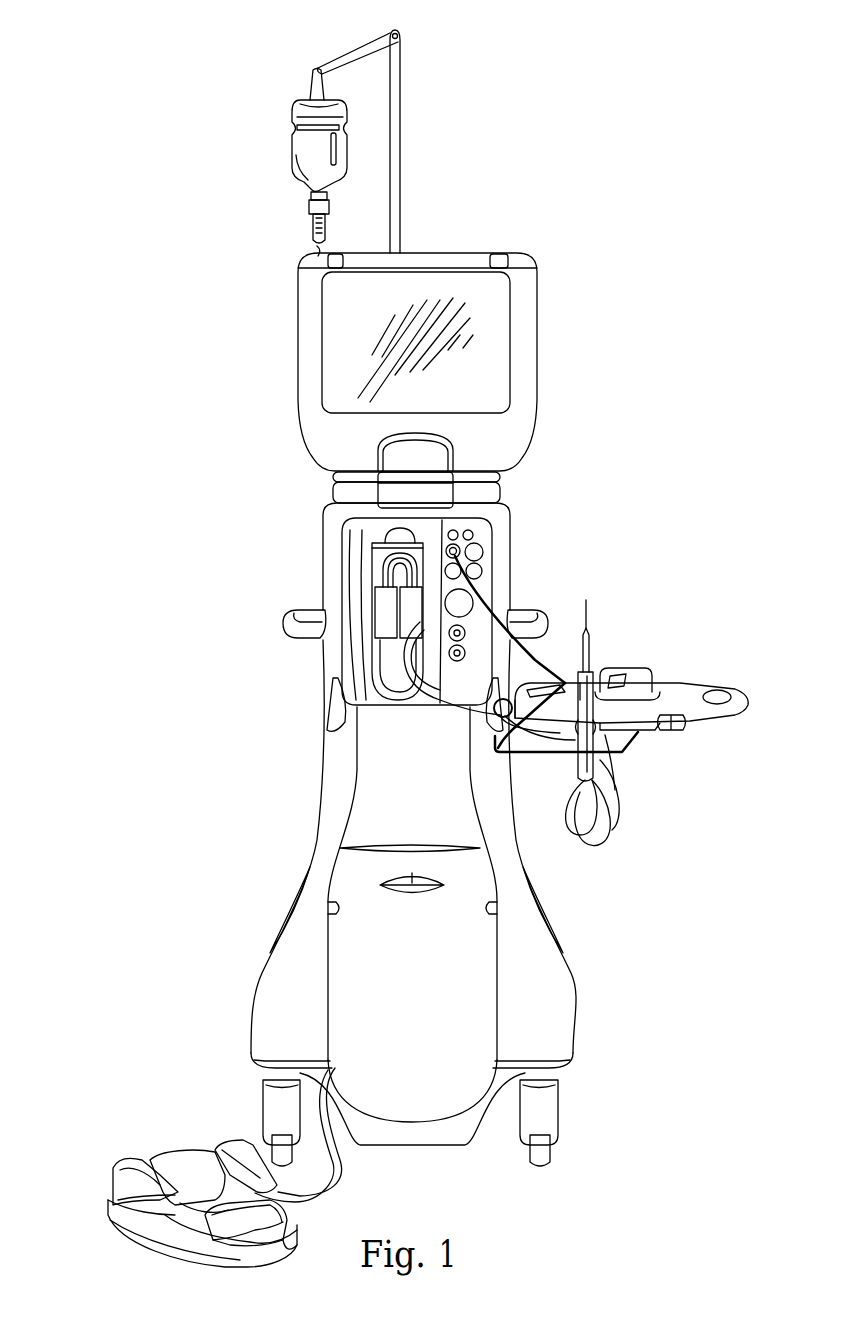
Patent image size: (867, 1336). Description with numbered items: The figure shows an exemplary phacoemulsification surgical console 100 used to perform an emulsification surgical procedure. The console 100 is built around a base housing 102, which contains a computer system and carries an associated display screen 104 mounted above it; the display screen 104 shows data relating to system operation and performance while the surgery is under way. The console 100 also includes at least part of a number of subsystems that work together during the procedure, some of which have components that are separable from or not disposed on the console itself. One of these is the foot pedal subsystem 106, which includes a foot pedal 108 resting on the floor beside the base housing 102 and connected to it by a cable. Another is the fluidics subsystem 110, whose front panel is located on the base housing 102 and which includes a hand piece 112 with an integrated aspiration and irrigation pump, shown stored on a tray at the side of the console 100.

The emulsification surgical console 100 is at (517, 65).
The base housing 102 is at (299, 795).
The display screen 104 is at (300, 337).
The foot pedal subsystem 106 is at (152, 1138).
The foot pedal 108 is at (118, 1180).
The fluidics subsystem 110 is at (294, 592).
The hand piece 112 is at (588, 625).